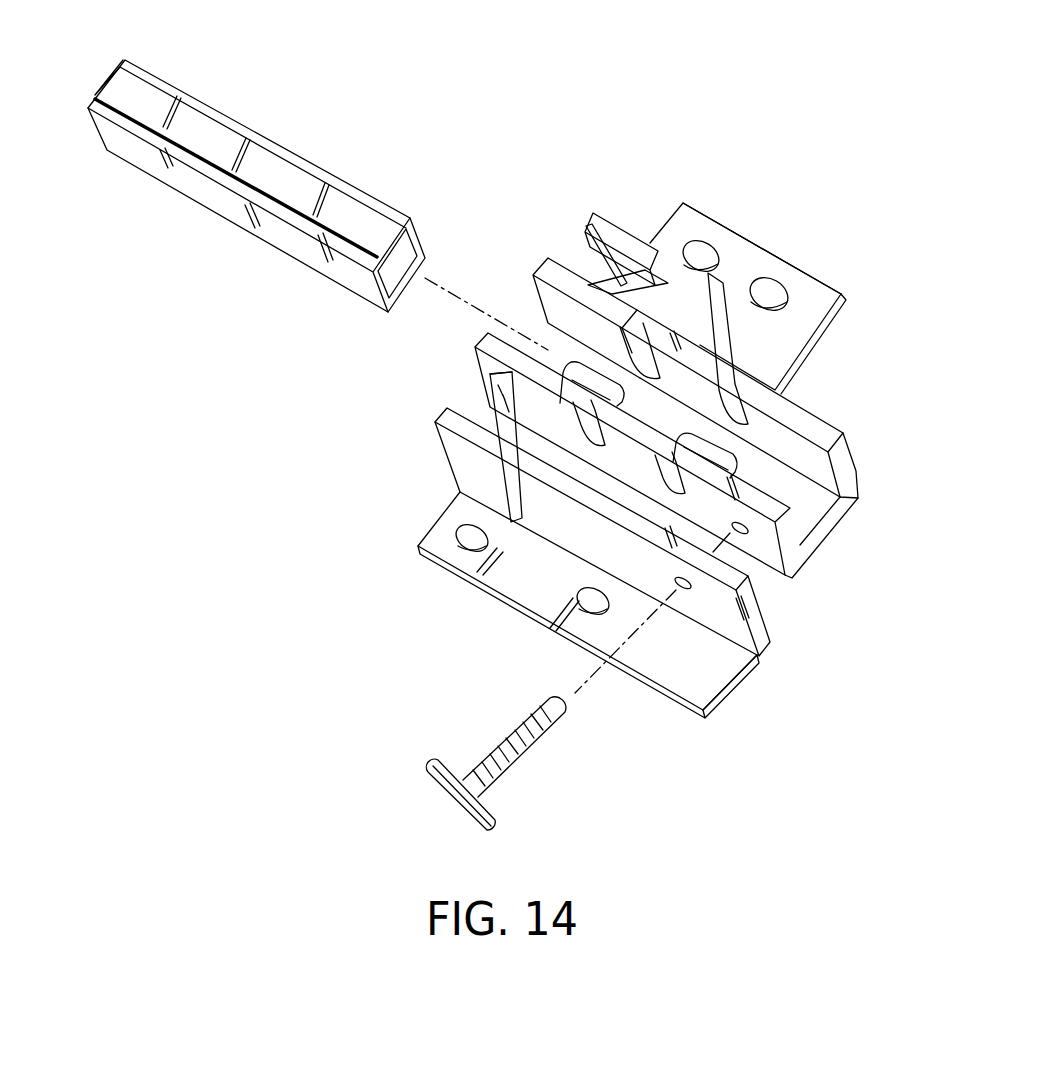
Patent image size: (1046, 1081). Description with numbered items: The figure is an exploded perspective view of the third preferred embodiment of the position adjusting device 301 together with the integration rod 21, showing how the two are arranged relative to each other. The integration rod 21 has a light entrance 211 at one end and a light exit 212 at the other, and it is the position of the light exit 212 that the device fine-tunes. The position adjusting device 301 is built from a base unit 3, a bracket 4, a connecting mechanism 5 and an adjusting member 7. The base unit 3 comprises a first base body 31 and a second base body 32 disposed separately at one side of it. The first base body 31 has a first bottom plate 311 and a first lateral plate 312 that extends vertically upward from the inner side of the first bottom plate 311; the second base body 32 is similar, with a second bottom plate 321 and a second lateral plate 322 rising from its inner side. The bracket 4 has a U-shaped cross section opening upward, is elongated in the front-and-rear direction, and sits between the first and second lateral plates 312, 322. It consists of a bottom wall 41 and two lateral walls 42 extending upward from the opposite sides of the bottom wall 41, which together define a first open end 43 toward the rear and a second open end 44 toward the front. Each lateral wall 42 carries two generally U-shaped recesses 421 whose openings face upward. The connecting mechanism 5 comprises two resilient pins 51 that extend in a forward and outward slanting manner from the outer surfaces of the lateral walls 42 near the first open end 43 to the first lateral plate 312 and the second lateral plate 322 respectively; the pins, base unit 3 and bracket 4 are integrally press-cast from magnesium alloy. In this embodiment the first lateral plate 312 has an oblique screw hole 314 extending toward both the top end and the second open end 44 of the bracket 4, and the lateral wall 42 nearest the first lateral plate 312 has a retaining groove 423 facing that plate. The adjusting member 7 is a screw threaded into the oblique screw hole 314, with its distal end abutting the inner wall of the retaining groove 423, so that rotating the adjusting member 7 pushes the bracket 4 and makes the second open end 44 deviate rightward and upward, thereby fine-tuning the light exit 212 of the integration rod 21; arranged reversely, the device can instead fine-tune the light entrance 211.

The integration rod 21 is at (258, 128).
The light entrance 211 is at (103, 81).
The light exit 212 is at (400, 278).
The base unit 3 is at (410, 517).
The position adjusting device 301 is at (713, 184).
The first base body 31 is at (422, 570).
The first bottom plate 311 is at (694, 680).
The first lateral plate 312 is at (593, 545).
The oblique screw hole 314 is at (692, 590).
The second base body 32 is at (840, 268).
The second bottom plate 321 is at (840, 295).
The second lateral plate 322 is at (611, 226).
The bracket 4 is at (866, 445).
The bottom wall 41 is at (828, 532).
The lateral walls 42 is at (818, 432).
The U-shaped recesses 421 is at (723, 398).
The retaining groove 423 is at (742, 535).
The first open end 43 is at (535, 295).
The second open end 44 is at (840, 488).
The connecting mechanism 5 is at (480, 403).
The resilient pins 51 is at (585, 241).
The adjusting member 7 is at (462, 742).